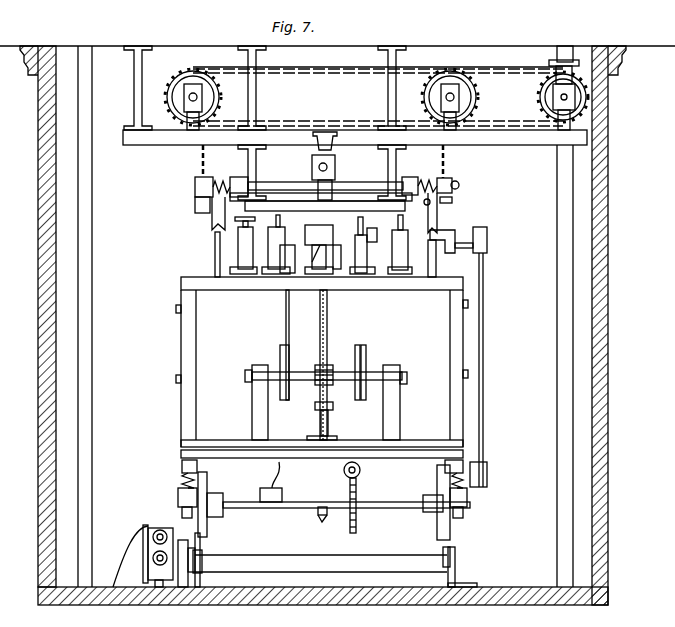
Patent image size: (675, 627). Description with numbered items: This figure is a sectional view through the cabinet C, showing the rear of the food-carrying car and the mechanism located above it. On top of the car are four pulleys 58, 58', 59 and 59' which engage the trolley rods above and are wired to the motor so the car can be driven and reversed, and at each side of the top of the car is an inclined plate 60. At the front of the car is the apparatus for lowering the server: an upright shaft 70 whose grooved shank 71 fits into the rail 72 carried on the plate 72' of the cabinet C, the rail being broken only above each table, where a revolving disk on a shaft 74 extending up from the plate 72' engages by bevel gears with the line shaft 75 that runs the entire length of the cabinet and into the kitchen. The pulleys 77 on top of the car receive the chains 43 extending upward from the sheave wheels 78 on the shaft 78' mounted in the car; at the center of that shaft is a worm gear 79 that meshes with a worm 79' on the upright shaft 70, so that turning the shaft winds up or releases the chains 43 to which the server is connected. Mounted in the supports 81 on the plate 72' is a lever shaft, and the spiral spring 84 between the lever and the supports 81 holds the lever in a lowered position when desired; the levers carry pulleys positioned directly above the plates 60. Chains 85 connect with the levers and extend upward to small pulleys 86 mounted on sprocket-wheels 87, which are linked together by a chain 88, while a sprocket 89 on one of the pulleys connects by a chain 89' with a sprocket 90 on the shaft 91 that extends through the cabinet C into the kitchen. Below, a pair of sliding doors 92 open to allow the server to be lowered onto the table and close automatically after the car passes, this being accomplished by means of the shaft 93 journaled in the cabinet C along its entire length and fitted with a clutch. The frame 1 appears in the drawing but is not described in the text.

The cabinet C is at (610, 327).
The frame 1 is at (205, 550).
The chains 43 is at (285, 321).
The pulley 58 is at (238, 245).
The pulley 58' is at (286, 244).
The pulley 59 is at (358, 245).
The pulley 59' is at (398, 244).
The inclined plate 60 is at (216, 258).
The shaft 70 is at (328, 320).
The grooved shank 71 is at (318, 248).
The rail 72 is at (344, 256).
The plate 72' is at (321, 204).
The shaft 74 is at (330, 190).
The line shaft 75 is at (318, 167).
The pulleys 77 is at (289, 259).
The sheave wheels 78 is at (323, 391).
The shaft 78' is at (396, 392).
The worm gear 79 is at (353, 371).
The worm 79' is at (317, 402).
The supports 81 is at (406, 178).
The spiral spring 84 is at (215, 180).
The chains 85 is at (202, 162).
The small pulleys 86 is at (188, 92).
The sprocket-wheels 87 is at (217, 87).
The chain 88 is at (313, 71).
The sprocket 89 is at (355, 95).
The chain 89' is at (491, 60).
The sprocket 90 is at (553, 88).
The shaft 91 is at (560, 98).
The sliding doors 92 is at (262, 557).
The shaft 93 is at (160, 528).